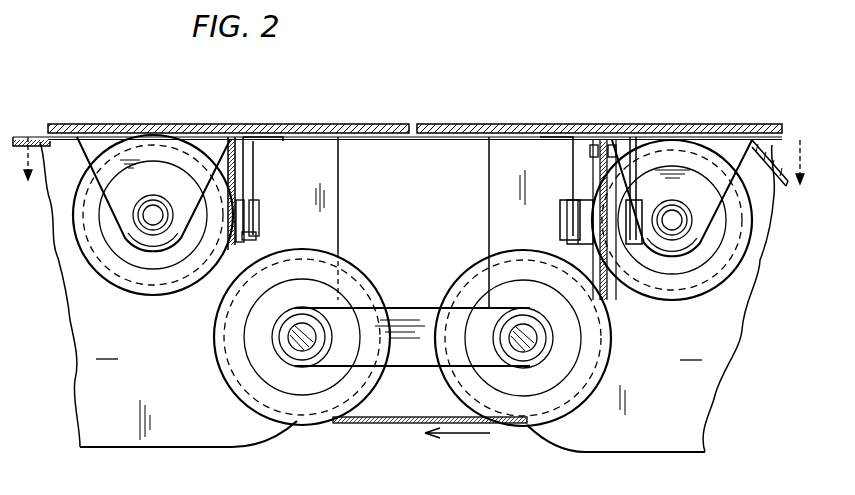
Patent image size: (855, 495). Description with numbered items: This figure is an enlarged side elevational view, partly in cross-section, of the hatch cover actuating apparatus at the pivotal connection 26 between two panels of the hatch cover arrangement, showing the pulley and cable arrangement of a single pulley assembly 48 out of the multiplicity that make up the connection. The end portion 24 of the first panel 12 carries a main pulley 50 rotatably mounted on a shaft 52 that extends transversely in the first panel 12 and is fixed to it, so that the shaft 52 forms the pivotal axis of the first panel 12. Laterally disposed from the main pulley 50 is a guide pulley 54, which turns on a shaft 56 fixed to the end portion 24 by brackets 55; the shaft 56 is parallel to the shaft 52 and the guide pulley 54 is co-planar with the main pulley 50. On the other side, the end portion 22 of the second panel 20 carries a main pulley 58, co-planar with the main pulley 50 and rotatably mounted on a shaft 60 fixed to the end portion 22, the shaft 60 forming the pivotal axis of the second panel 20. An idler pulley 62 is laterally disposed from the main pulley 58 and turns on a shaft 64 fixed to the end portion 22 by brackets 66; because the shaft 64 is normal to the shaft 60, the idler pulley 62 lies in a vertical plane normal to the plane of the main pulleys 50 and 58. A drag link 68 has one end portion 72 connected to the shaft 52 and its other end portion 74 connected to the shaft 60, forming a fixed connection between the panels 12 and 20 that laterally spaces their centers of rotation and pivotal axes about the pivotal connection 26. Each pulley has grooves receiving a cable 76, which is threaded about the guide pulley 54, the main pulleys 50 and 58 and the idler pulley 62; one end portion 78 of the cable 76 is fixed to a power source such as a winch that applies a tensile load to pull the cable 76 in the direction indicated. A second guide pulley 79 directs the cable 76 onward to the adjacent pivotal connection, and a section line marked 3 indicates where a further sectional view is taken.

The first panel 12 is at (145, 447).
The second panel 20 is at (752, 138).
The end portion of the second panel 22 is at (691, 351).
The end portion of the first panel 24 is at (107, 350).
The pivotal connection 26 is at (420, 112).
The section line 3- 3 is at (412, 171).
The pulley assembly 48 is at (405, 259).
The main pulley 50 is at (272, 400).
The shaft 52 is at (316, 330).
The guide pulley 54 is at (130, 262).
The brackets 55 is at (130, 172).
The shaft 56 is at (153, 213).
The main pulley 58 is at (478, 262).
The shaft 60 is at (510, 335).
The idler pulley 62 is at (246, 250).
The shaft 64 is at (568, 220).
The brackets 66 is at (253, 176).
The drag link 68 is at (408, 345).
The end portion of the drag link 72 is at (312, 345).
The end portion of the drag link 74 is at (526, 360).
The cable 76 is at (60, 137).
The end portion of the cable 78 is at (17, 137).
The second guide pulley 79 is at (692, 265).